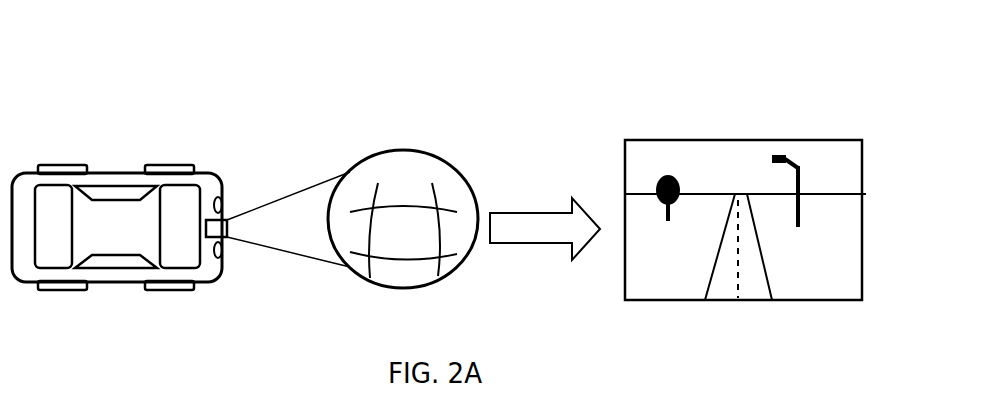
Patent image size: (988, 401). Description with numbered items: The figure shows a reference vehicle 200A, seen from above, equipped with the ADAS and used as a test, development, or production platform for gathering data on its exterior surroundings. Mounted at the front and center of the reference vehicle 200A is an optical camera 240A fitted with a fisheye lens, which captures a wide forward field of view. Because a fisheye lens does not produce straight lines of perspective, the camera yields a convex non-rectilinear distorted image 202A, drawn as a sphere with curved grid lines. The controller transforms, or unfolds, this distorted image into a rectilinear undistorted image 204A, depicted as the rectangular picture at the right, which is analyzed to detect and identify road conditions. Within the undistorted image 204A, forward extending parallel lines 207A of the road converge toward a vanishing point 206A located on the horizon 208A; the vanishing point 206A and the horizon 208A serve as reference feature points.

The reference vehicle 200A is at (125, 218).
The optical camera 240A is at (224, 212).
The convex non-rectilinear distorted image 202A is at (413, 136).
The rectilinear undistorted image 204A is at (670, 116).
The vanishing point 206A is at (735, 194).
The forward extending parallel lines 207A is at (706, 284).
The horizon 208A is at (827, 194).